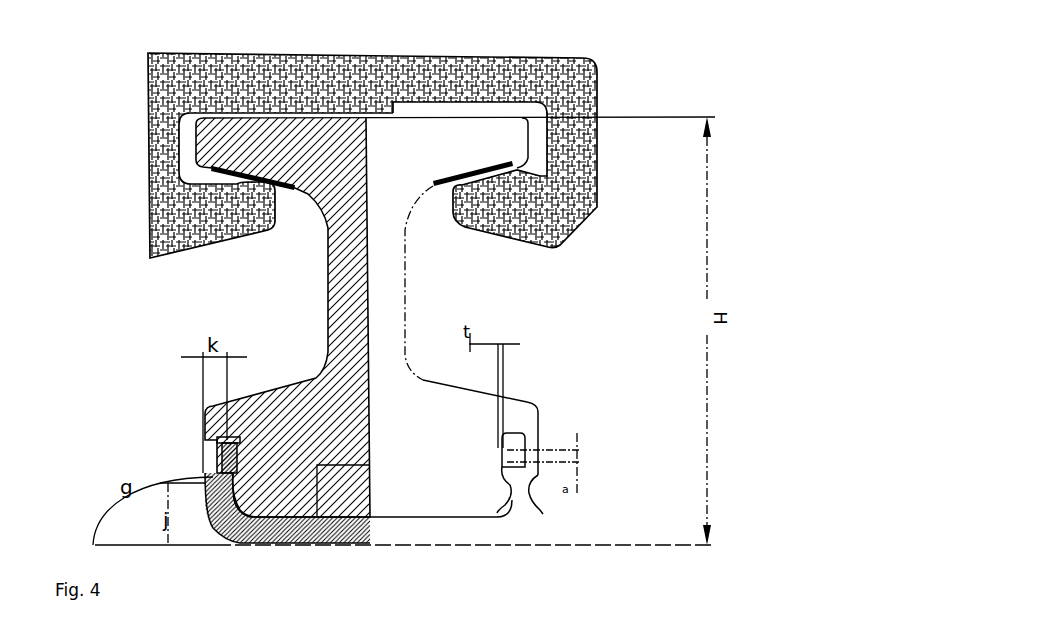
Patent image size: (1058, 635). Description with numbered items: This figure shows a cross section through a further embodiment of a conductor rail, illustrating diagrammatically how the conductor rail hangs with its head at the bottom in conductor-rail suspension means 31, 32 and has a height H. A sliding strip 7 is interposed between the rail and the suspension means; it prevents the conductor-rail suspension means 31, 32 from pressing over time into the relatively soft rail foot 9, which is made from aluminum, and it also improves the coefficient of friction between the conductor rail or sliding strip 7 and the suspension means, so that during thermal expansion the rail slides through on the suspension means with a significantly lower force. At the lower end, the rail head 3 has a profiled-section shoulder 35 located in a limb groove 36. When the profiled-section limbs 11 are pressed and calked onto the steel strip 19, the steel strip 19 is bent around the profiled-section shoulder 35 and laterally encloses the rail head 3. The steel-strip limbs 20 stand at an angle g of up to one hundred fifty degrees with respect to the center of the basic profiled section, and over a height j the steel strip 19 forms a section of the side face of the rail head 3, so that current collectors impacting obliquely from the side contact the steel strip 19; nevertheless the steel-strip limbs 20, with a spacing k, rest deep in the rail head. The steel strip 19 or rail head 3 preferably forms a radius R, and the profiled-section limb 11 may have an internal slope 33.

The rail head 3 is at (443, 467).
The sliding strip 7 is at (447, 181).
The rail foot 9 is at (330, 140).
The profiled-section limb 11 is at (215, 463).
The steel strip 19 is at (265, 545).
The steel-strip limb 20 is at (218, 503).
The conductor-rail suspension means 31 is at (190, 62).
The conductor-rail suspension means 32 is at (596, 72).
The internal slope 33 is at (537, 501).
The profiled-section shoulder 35 is at (487, 500).
The limb groove 36 is at (516, 440).